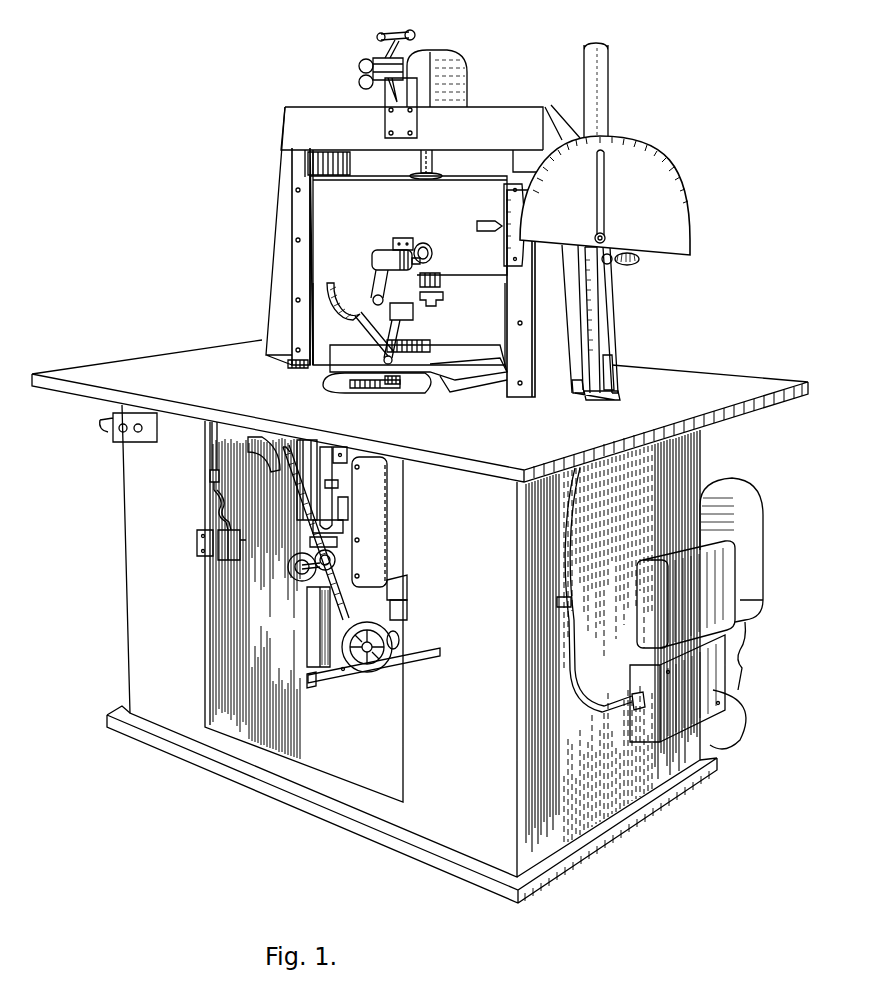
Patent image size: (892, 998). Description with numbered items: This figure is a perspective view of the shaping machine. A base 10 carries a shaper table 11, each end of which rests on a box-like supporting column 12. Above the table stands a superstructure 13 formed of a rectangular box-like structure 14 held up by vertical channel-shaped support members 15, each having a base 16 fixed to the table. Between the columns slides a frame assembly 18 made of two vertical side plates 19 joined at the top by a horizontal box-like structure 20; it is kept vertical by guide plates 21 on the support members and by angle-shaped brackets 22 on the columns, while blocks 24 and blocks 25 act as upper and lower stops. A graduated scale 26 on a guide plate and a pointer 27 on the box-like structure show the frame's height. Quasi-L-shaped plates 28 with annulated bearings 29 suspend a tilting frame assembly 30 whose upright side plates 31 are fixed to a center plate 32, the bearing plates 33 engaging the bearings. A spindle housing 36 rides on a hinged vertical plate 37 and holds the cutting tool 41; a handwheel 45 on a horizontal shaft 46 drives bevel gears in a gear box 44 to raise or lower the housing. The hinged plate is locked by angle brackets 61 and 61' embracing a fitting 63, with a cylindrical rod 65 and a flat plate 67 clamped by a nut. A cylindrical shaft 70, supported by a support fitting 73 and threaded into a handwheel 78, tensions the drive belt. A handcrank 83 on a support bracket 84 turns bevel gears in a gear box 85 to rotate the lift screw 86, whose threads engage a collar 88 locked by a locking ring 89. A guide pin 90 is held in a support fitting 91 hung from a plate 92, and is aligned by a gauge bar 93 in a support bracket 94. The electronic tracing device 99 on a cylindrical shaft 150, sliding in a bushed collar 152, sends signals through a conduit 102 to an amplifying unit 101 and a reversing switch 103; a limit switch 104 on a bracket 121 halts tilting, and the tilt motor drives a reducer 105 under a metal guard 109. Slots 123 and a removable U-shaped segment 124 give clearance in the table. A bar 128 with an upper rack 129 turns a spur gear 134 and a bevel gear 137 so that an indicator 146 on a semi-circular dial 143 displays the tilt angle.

The base 10 is at (500, 898).
The shaper table 11 is at (166, 378).
The box-like supporting structure or column 12 is at (162, 651).
The superstructure 13 is at (270, 130).
The rectangular box-like structure 14 is at (487, 135).
The vertical channel-shaped column or support member 15 is at (276, 266).
The base of support member 16 is at (601, 396).
The frame assembly 18 is at (373, 172).
The vertical side plate 19 is at (332, 670).
The horizontal rectangular box-like structure 20 is at (346, 204).
The guide plate 21 is at (292, 222).
The angle-shaped bracket 22 is at (307, 622).
The block 24 is at (324, 152).
The block 25 is at (310, 688).
The graduated scale 26 is at (504, 246).
The pointer 27 is at (490, 221).
The quasi-L-shaped plate 28 is at (250, 452).
The annulated outwardly depending bearing 29 is at (340, 298).
The tilting frame assembly 30 is at (462, 377).
The upright side plate 31 is at (290, 478).
The vertically disposed center plate 32 is at (450, 379).
The bearing plate 33 is at (278, 466).
The spindle housing 36 is at (377, 571).
The hinged vertical plate 37 is at (403, 590).
The cutting or milling tool 41 is at (390, 384).
The gear box 44 is at (407, 615).
The handwheel 45 is at (375, 670).
The horizontal shaft 46 is at (400, 638).
The angle bracket 61 is at (358, 439).
The angle bracket 61' is at (350, 500).
The fitting 63 is at (316, 448).
The cylindrical rod 65 is at (320, 497).
The flat plate 67 is at (310, 527).
The cylindrical shaft 70 is at (298, 572).
The support fitting 73 is at (312, 542).
The handwheel 78 is at (290, 564).
The handcrank 83 is at (380, 34).
The support bracket 84 is at (385, 124).
The gear box 85 is at (468, 88).
The lift screw or shaft 86 is at (433, 163).
The flanged internally threaded collar 88 is at (440, 280).
The locking ring 89 is at (443, 297).
The guide pin 90 is at (398, 352).
The support fitting 91 is at (413, 318).
The plate 92 is at (403, 238).
The gauge bar 93 is at (363, 318).
The support bracket 94 is at (377, 272).
The electronic tracing device 99 is at (384, 250).
The amplifying unit 101 is at (640, 656).
The conduit 102 is at (575, 580).
The reversing switch 103 is at (637, 600).
The limit switch 104 is at (232, 560).
The reducer device 105 is at (703, 487).
The metal guard 109 is at (765, 540).
The bracket 121 is at (197, 540).
The slot 123 is at (297, 368).
The U-shaped segment 124 is at (330, 389).
The link or bar 128 is at (594, 368).
The upper rack 129 is at (604, 300).
The spur gear 134 is at (611, 263).
The bevel gear 137 is at (638, 261).
The semi-circular dial 143 is at (690, 214).
The pointer or indicator 146 is at (592, 225).
The cylindrical shaft 150 is at (424, 243).
The bushed collar 152 is at (422, 262).